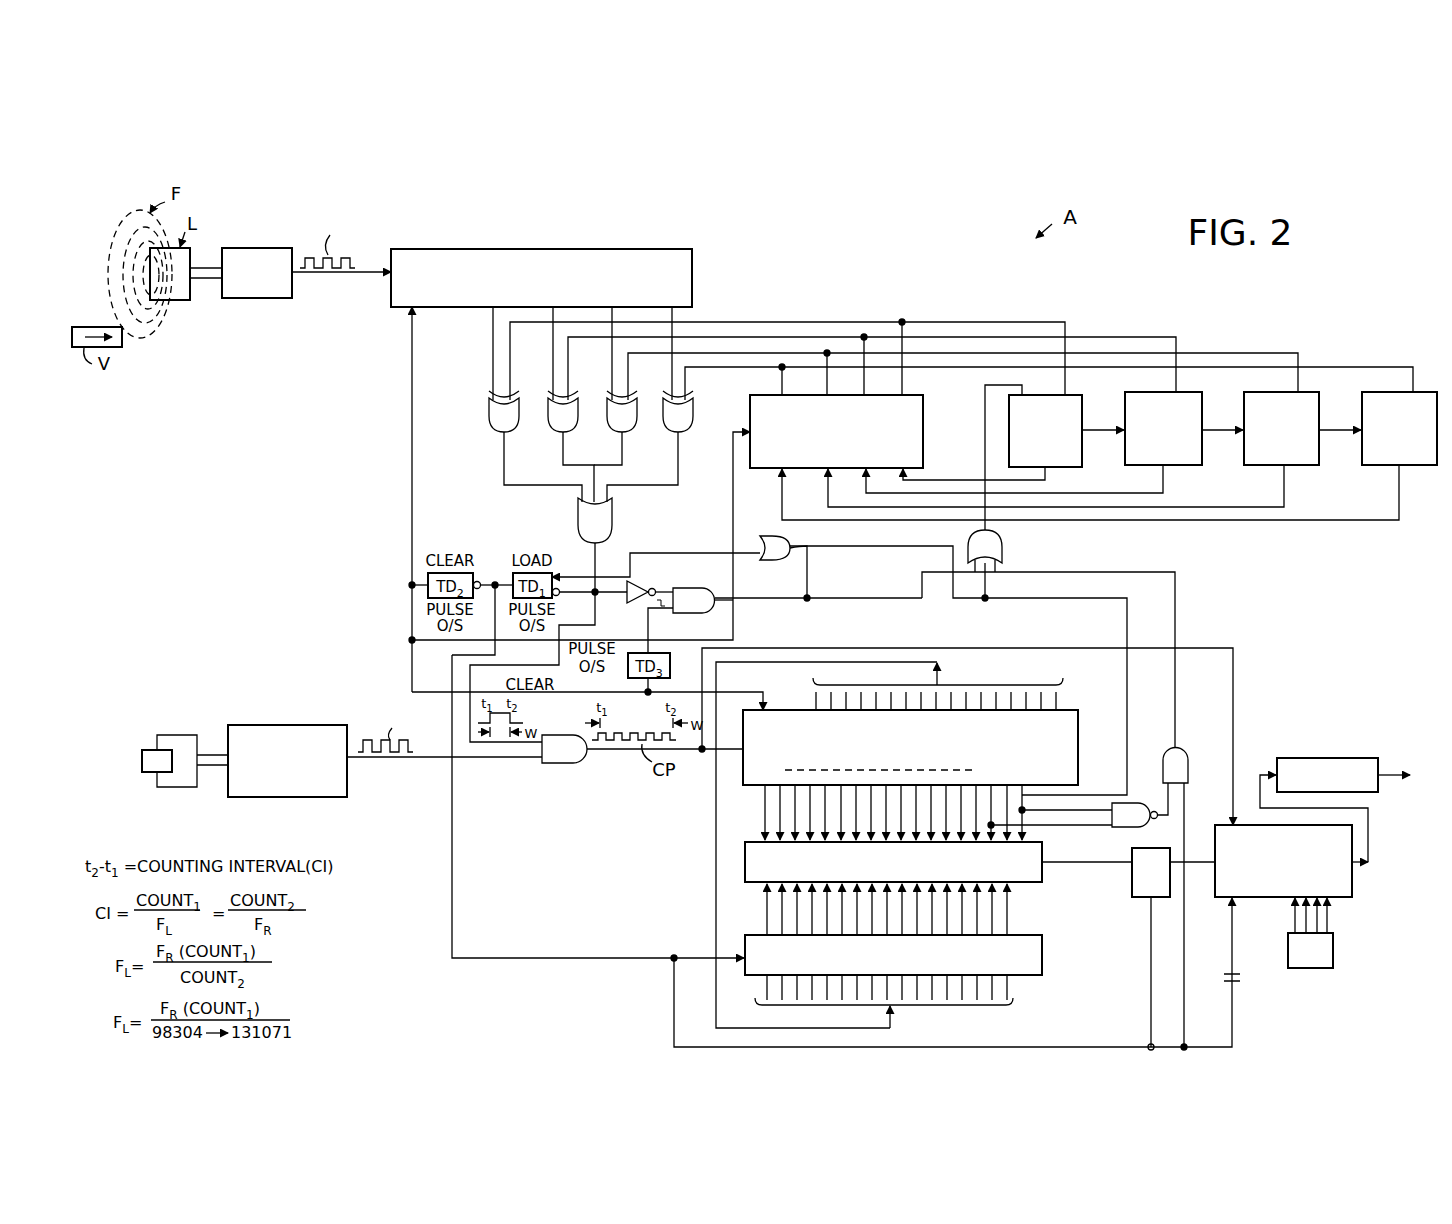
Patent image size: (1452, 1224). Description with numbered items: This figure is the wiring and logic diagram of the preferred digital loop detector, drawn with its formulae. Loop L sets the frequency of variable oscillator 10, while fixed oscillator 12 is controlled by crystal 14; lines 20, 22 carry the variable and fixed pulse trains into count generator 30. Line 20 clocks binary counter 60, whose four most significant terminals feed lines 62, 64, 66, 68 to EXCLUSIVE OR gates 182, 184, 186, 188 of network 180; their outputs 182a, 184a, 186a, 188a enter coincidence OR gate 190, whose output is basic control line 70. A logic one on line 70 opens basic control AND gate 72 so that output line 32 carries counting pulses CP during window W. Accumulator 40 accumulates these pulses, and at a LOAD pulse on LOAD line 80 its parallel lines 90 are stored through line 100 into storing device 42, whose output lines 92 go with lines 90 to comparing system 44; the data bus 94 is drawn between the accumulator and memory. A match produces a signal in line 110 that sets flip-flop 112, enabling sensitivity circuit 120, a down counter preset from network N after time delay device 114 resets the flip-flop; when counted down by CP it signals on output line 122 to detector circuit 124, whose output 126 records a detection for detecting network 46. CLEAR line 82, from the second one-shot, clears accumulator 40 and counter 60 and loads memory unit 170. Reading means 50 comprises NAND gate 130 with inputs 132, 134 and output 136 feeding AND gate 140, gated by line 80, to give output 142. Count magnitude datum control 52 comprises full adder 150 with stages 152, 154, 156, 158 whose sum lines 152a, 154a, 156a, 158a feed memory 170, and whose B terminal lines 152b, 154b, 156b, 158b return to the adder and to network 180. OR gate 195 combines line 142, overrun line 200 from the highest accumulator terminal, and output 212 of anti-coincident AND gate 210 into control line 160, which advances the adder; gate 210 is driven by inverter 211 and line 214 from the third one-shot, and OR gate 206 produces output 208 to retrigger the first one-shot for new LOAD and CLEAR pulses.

The variable oscillator 10 is at (268, 246).
The fixed oscillator 12 is at (243, 722).
The crystal 14 is at (138, 745).
The line 20 is at (318, 275).
The line 22 is at (350, 740).
The count generator 30 is at (536, 786).
The output line 32 is at (608, 753).
The accumulator 40 is at (1069, 700).
The storing device 42 is at (1046, 958).
The comparing system 44 is at (1046, 874).
The detecting network 46 is at (1347, 754).
The reading means 50 is at (1150, 745).
The count magnitude datum control 52 is at (882, 280).
The binary counter 60 is at (578, 256).
The line 62 is at (492, 328).
The line 64 is at (552, 350).
The line 66 is at (611, 362).
The line 68 is at (680, 312).
The basic control line 70 is at (598, 618).
The basic control AND gate 72 is at (564, 764).
The LOAD line 80 is at (1184, 1018).
The CLEAR line 82 is at (410, 364).
The parallel lines 90 is at (764, 802).
The parallel output lines 92 is at (766, 905).
The data bus 94 is at (862, 672).
The line 100 is at (716, 800).
The line 110 is at (1131, 870).
The flip-flop 112 is at (1146, 905).
The time delay device 114 is at (1242, 978).
The sensitivity circuit 120 is at (1355, 886).
The output line 122 is at (1370, 842).
The detector circuit 124 is at (1374, 792).
The output 126 is at (1390, 772).
The NAND gate 130 is at (1132, 828).
The input 132 is at (1087, 848).
The input 134 is at (1085, 800).
The output 136 is at (1175, 798).
The AND gate 140 is at (1186, 750).
The output 142 is at (1176, 620).
The full adder 150 is at (1334, 344).
The full adder stage 152 is at (1078, 396).
The full adder stage 154 is at (1193, 398).
The full adder stage 156 is at (1285, 395).
The full adder stage 158 is at (1382, 392).
The sum line 152a is at (1046, 478).
The sum line 154a is at (1166, 487).
The sum line 156a is at (1290, 490).
The sum line 158a is at (1378, 522).
The B terminal line 152b is at (509, 362).
The B terminal line 154b is at (566, 378).
The B terminal line 156b is at (632, 386).
The B terminal line 158b is at (688, 383).
The control line 160 is at (983, 462).
The memory unit 170 is at (925, 432).
The network 180 is at (474, 514).
The EXCLUSIVE OR gate 182 is at (497, 424).
The EXCLUSIVE OR gate 184 is at (557, 425).
The EXCLUSIVE OR gate 186 is at (614, 426).
The EXCLUSIVE OR gate 188 is at (691, 412).
The output line 182a is at (503, 483).
The output line 184a is at (580, 489).
The output line 186a is at (620, 464).
The output line 188a is at (636, 488).
The coincidence OR gate 190 is at (580, 525).
The OR gate 195 is at (1005, 548).
The line 200 is at (908, 546).
The OR gate 206 is at (766, 565).
The output 208 is at (712, 552).
The anti-coincident AND gate 210 is at (716, 614).
The inverter 211 is at (640, 581).
The output 212 is at (810, 580).
The line 214 is at (720, 652).